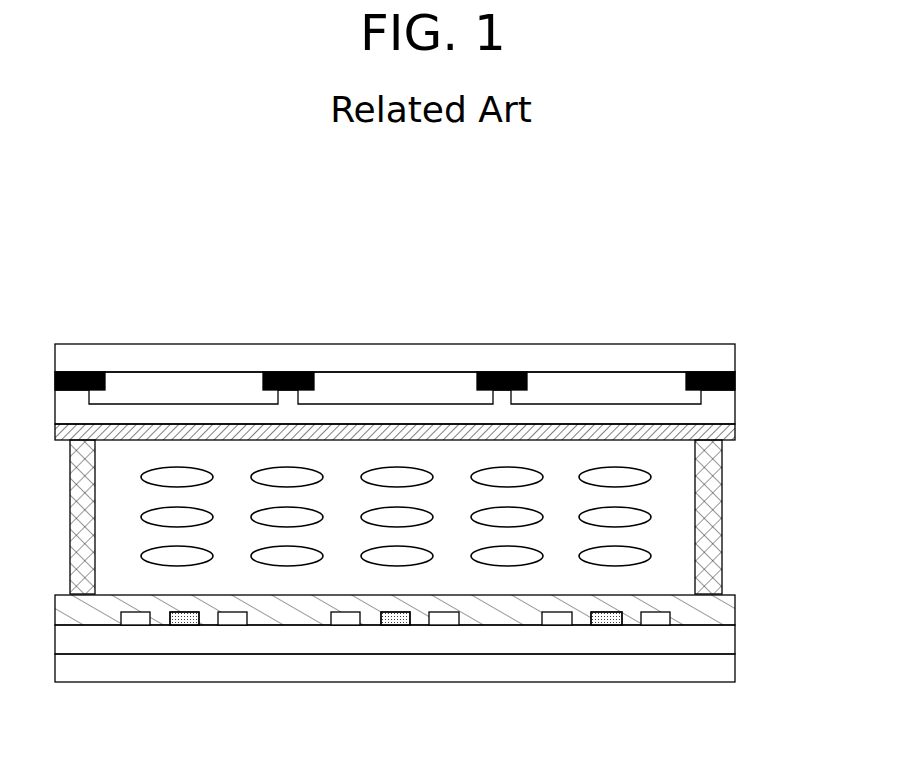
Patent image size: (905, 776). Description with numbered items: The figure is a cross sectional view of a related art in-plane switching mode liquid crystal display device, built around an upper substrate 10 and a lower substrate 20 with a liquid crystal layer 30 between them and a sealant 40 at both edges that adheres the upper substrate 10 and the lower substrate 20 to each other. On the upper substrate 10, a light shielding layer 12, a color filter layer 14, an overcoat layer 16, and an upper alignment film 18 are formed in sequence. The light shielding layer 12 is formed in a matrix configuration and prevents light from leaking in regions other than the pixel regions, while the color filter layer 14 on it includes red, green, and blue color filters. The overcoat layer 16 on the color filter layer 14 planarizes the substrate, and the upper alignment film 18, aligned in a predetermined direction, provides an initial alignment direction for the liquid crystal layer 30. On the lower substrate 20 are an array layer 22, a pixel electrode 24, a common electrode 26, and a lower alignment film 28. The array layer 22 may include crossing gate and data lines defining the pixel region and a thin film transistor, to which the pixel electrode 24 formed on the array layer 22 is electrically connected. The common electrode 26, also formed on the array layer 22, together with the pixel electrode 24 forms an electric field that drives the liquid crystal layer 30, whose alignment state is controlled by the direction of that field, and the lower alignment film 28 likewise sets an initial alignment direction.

The upper substrate 10 is at (735, 357).
The light shielding layer 12 is at (503, 372).
The color filter layer 14 is at (640, 385).
The overcoat layer 16 is at (735, 399).
The upper alignment film 18 is at (735, 428).
The lower substrate 20 is at (735, 661).
The array layer 22 is at (735, 631).
The pixel electrode 24 is at (135, 618).
The common electrode 26 is at (184, 618).
The lower alignment film 28 is at (735, 601).
The liquid crystal layer 30 is at (680, 506).
The sealant 40 is at (722, 548).